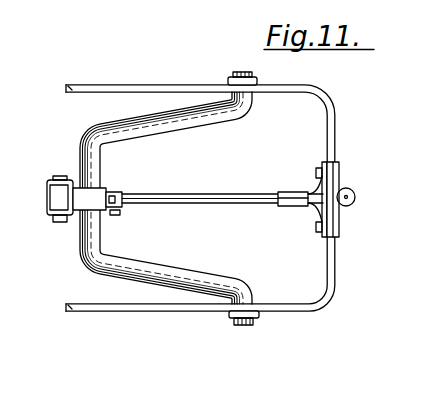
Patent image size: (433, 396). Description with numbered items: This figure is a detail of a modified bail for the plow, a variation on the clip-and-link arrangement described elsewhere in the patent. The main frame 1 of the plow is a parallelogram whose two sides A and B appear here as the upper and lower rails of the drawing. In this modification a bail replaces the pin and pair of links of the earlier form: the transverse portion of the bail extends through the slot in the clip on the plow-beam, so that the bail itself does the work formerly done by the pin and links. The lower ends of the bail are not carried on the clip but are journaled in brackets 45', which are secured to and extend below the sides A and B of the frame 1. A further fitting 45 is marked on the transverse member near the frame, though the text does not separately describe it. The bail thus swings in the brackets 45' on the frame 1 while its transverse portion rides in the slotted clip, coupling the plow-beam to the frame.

The main frame 1 is at (334, 149).
The frame side A is at (296, 286).
The frame side B is at (300, 93).
The bar clamp and frame bracket 45 is at (316, 199).
The brackets 45' is at (263, 198).